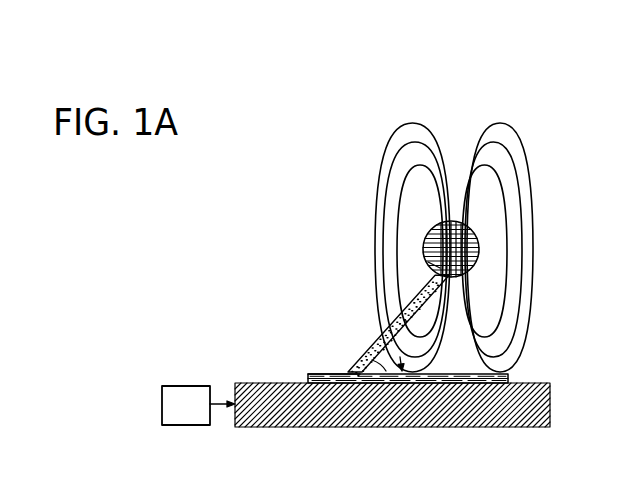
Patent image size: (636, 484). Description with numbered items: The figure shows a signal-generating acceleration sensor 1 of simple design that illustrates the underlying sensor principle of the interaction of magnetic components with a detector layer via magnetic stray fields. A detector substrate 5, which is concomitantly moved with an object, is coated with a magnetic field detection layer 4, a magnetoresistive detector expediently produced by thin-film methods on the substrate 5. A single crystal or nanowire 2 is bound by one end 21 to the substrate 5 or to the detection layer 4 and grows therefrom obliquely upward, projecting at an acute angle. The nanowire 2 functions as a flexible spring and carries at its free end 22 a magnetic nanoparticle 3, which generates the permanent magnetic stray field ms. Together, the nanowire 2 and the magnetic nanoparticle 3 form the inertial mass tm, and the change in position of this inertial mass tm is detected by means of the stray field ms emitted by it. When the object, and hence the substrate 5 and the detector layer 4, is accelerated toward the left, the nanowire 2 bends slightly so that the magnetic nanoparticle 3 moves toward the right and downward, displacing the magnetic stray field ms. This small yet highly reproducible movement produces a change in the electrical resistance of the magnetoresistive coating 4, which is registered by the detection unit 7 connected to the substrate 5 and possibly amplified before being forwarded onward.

The acceleration sensor 1 is at (279, 188).
The nanowire 2 is at (550, 288).
The magnetic nanoparticle 3 is at (478, 242).
The magnetic field detection layer 4 is at (585, 357).
The substrate 5 is at (530, 405).
The detection unit 7 is at (198, 405).
The end of the nanowire 21 is at (345, 372).
The free end of the nanowire 22 is at (423, 252).
The inertial mass tm is at (407, 303).
The magnetic stray field ms is at (517, 272).